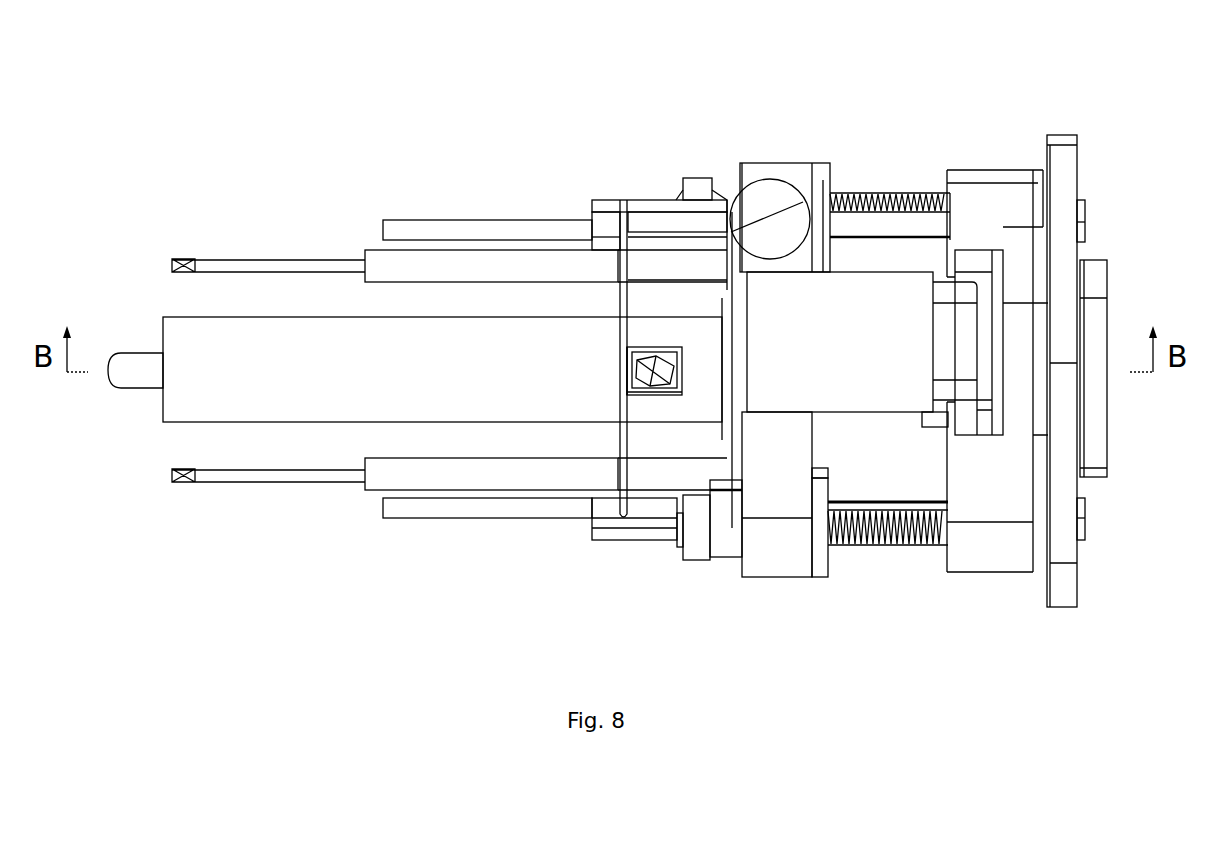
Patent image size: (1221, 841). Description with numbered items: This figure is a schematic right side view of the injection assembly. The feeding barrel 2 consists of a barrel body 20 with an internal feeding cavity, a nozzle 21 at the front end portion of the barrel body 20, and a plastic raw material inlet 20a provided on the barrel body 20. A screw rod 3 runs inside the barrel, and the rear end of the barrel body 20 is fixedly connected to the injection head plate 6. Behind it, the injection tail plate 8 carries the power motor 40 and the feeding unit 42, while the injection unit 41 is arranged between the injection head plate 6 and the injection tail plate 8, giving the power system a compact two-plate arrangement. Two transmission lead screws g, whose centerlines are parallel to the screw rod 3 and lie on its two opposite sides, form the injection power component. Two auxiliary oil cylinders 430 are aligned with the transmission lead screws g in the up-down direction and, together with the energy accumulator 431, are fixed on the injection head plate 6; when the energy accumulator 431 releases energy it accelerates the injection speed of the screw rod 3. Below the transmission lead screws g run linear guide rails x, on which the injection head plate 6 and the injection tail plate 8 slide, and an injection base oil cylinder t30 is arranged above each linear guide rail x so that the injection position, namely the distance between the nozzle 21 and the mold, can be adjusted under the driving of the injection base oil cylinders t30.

The feeding barrel 2 is at (90, 312).
The nozzle 21 is at (143, 362).
The barrel body 20 is at (228, 340).
The plastic raw material inlet 20a is at (627, 392).
The screw rod 3 is at (620, 363).
The injection base oil cylinder t30 is at (352, 265).
The linear guide rail x is at (474, 222).
The auxiliary oil cylinder 430 is at (612, 200).
The energy accumulator 431 is at (758, 200).
The transmission lead screw g is at (878, 193).
The power motor 40 is at (868, 365).
The injection head plate 6 is at (778, 500).
The injection tail plate 8 is at (1002, 500).
The injection unit 41 is at (1071, 120).
The feeding unit 42 is at (1113, 245).